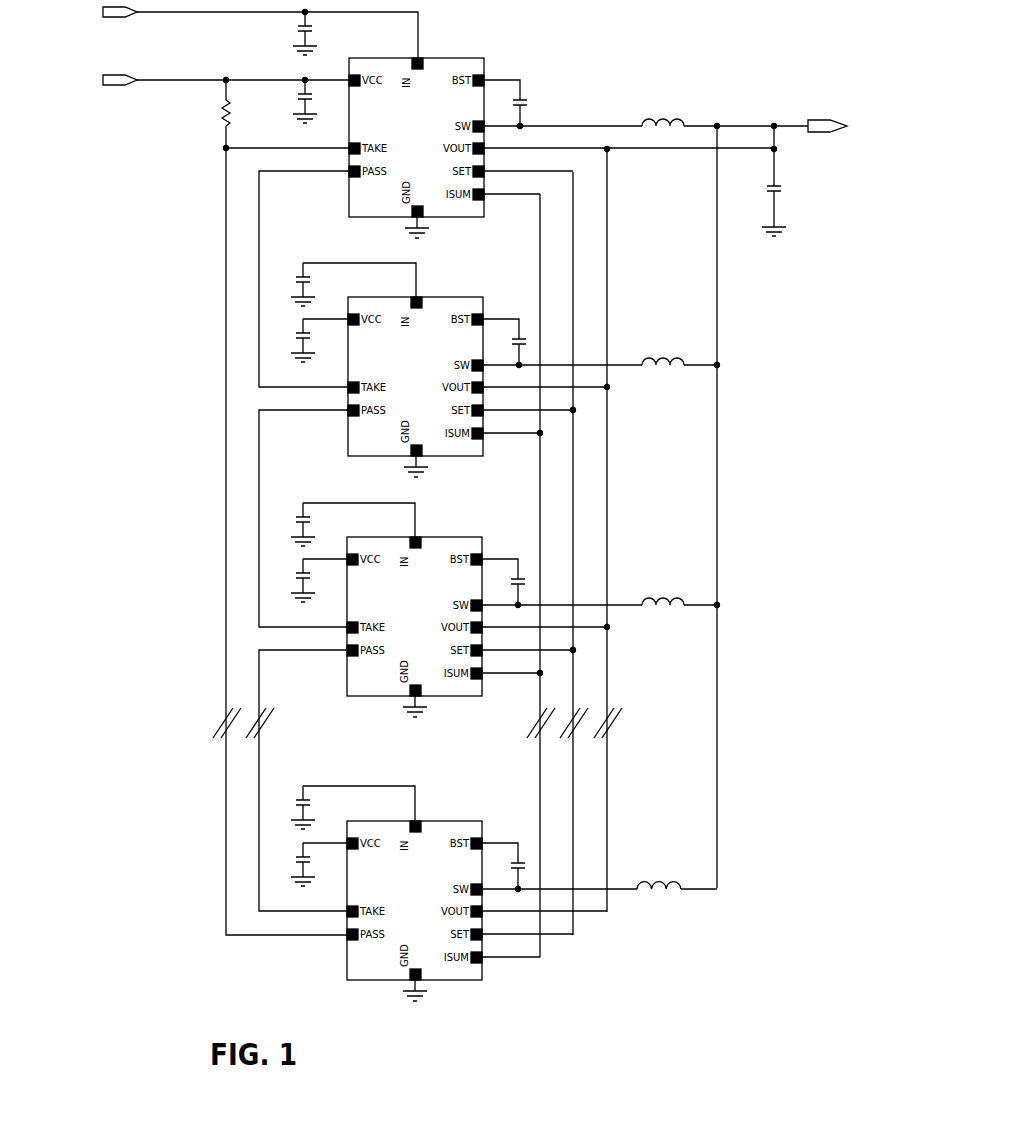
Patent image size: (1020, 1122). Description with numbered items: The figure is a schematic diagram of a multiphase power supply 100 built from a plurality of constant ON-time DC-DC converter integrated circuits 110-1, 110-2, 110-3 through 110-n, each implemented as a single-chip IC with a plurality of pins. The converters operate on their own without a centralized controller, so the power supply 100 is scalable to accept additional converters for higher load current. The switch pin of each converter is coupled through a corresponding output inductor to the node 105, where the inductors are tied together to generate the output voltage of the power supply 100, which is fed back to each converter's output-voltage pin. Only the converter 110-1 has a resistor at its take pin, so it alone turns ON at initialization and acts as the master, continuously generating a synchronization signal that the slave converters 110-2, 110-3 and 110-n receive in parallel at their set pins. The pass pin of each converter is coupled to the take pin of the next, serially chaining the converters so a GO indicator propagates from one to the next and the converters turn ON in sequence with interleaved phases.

The multiphase power supply 100 is at (103, 252).
The node 105 is at (821, 121).
The COT DC-DC converter IC 110-1 is at (462, 57).
The COT DC-DC converter IC 110-2 is at (455, 296).
The COT DC-DC converter IC 110-3 is at (452, 536).
The COT DC-DC converter IC 110-n is at (451, 820).